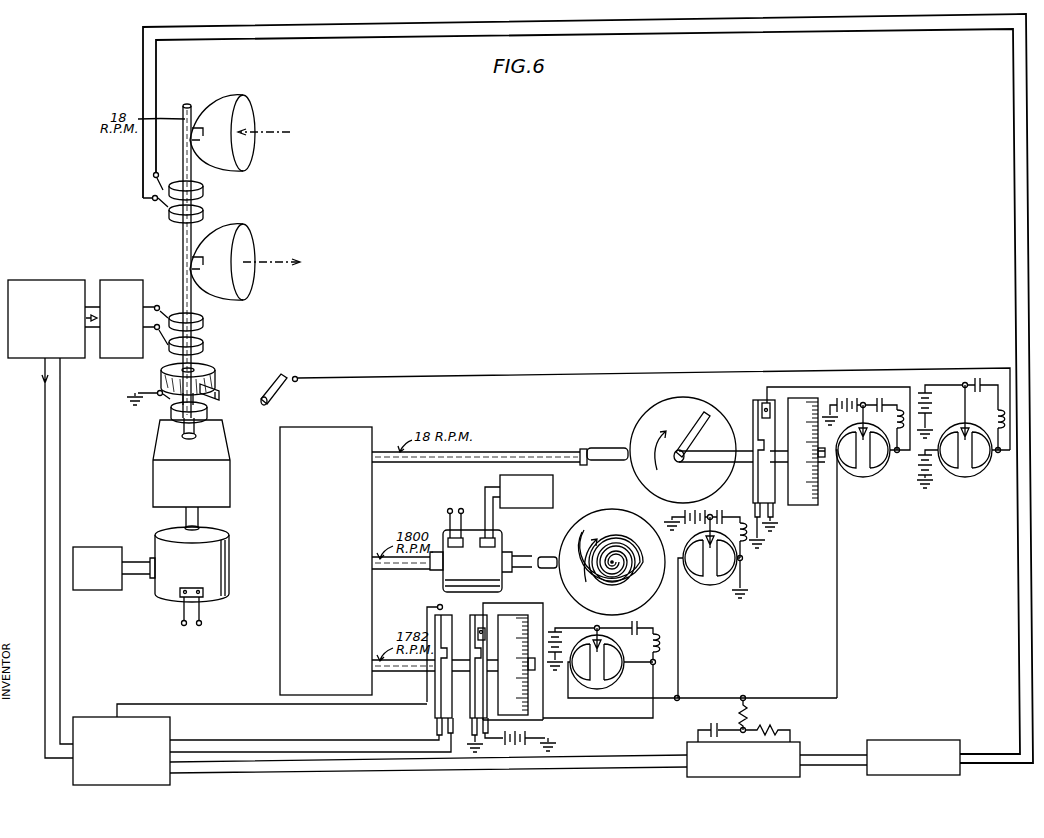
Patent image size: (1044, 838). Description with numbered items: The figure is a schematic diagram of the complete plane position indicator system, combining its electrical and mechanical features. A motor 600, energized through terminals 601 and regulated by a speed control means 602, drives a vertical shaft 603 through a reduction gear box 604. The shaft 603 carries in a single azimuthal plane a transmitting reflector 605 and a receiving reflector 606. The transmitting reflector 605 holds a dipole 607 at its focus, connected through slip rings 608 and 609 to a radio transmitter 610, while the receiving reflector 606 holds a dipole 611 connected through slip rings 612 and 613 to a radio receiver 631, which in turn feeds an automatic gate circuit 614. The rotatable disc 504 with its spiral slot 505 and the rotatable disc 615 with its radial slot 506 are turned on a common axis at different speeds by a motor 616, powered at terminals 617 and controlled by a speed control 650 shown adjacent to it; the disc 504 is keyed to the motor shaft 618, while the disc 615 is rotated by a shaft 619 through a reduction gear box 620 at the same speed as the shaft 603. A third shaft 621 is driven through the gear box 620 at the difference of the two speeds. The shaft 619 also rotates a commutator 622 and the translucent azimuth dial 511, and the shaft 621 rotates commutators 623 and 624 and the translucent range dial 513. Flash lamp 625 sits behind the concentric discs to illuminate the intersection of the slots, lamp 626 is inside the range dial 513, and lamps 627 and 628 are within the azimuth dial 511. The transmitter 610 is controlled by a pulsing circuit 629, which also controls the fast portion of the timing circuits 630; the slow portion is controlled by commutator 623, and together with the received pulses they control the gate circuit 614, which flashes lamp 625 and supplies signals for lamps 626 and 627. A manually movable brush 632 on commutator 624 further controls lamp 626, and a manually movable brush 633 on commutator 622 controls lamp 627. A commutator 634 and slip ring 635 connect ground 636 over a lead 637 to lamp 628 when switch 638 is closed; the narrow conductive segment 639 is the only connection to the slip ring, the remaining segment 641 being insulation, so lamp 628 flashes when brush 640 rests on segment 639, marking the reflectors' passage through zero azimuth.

The rotatable disc 504 is at (606, 520).
The spiral slot 505 is at (624, 525).
The radial slot 506 is at (697, 418).
The translucent azimuth dial 511 is at (800, 398).
The translucent range dial 513 is at (517, 620).
The motor 600 is at (220, 580).
The terminals 601 is at (186, 630).
The speed control means 602 is at (93, 590).
The vertical shaft 603 is at (185, 250).
The reduction gear box 604 is at (232, 496).
The transmitting reflector 605 is at (260, 238).
The receiving reflector 606 is at (260, 110).
The dipole 607 is at (198, 248).
The slip ring 608 is at (205, 322).
The slip ring 609 is at (205, 345).
The radio transmitter 610 is at (123, 280).
The dipole 611 is at (195, 104).
The slip ring 612 is at (205, 192).
The slip ring 613 is at (205, 212).
The automatic gate circuit 614 is at (802, 746).
The rotatable disc 615 is at (655, 420).
The motor 616 is at (462, 580).
The terminals 617 is at (461, 508).
The shaft 618 is at (548, 560).
The shaft 619 is at (605, 448).
The reduction gear box 620 is at (318, 427).
The third shaft 621 is at (398, 672).
The commutator 622 is at (755, 418).
The commutator 623 is at (444, 630).
The commutator 624 is at (490, 712).
The flash lamp 625 is at (688, 584).
The flash lamp 626 is at (610, 690).
The flash lamp 627 is at (864, 480).
The flash lamp 628 is at (968, 480).
The pulsing circuit 629 is at (62, 280).
The timing circuits 630 is at (95, 716).
The radio receiver 631 is at (918, 740).
The manually movable brush 632 is at (473, 640).
The manually movable brush 633 is at (768, 403).
The commutator 634 is at (205, 370).
The slip ring 635 is at (180, 416).
The ground 636 is at (135, 394).
The lead 637 is at (510, 376).
The switch 638 is at (296, 376).
The narrow segment 639 is at (162, 404).
The brush 640 is at (222, 392).
The remaining segment 641 is at (220, 398).
The speed control 650 is at (555, 480).